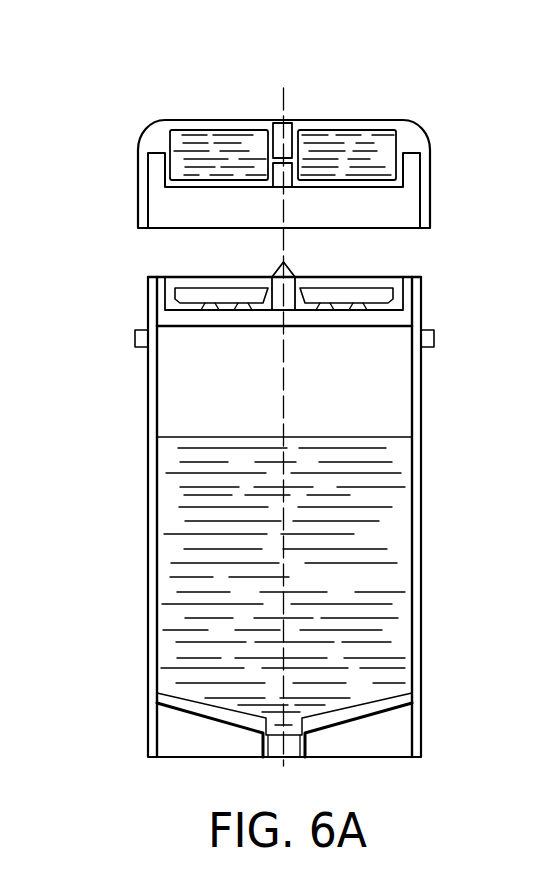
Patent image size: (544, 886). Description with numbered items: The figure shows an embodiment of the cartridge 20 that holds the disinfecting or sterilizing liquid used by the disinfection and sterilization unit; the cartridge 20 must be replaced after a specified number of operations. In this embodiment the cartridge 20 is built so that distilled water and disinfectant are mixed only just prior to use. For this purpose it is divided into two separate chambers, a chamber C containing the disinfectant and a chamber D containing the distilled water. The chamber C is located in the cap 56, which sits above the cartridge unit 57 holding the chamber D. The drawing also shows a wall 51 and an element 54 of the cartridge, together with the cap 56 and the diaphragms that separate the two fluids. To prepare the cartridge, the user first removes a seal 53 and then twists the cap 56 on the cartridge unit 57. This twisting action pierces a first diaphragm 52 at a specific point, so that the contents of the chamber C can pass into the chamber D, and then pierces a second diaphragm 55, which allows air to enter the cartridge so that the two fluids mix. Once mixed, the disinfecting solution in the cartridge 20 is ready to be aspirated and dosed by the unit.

The cartridge 20 is at (273, 509).
The container wall 51 is at (152, 410).
The first diaphragm 52 is at (176, 306).
The seal 53 is at (140, 337).
The cap chamber 54 is at (176, 184).
The second diaphragm 55 is at (285, 157).
The cap 56 is at (410, 141).
The cartridge unit 57 is at (422, 303).
The chamber C is at (348, 152).
The chamber D is at (218, 508).